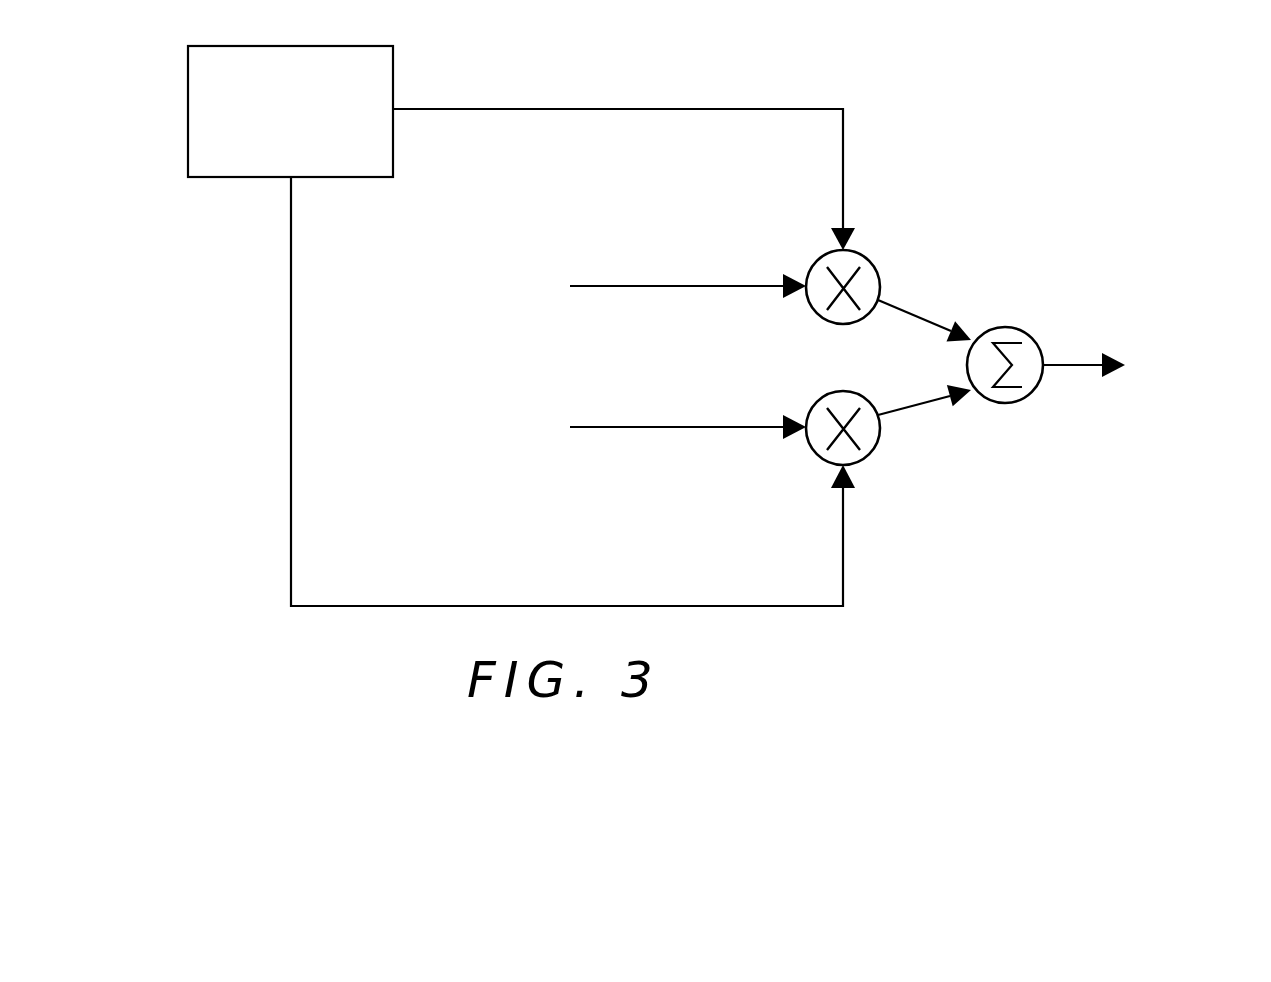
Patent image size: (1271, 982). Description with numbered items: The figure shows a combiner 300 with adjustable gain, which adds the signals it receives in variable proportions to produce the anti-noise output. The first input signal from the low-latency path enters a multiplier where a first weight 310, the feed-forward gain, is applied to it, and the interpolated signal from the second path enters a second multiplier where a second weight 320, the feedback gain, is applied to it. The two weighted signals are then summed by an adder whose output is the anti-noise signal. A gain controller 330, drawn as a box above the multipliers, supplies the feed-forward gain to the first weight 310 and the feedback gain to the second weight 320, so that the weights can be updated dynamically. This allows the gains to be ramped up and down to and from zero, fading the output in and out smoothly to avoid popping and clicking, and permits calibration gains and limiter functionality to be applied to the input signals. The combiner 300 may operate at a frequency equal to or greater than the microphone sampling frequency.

The combiner 300 is at (225, 626).
The gain controller 330 is at (317, 46).
The weight 310 is at (880, 281).
The weight 320 is at (876, 446).